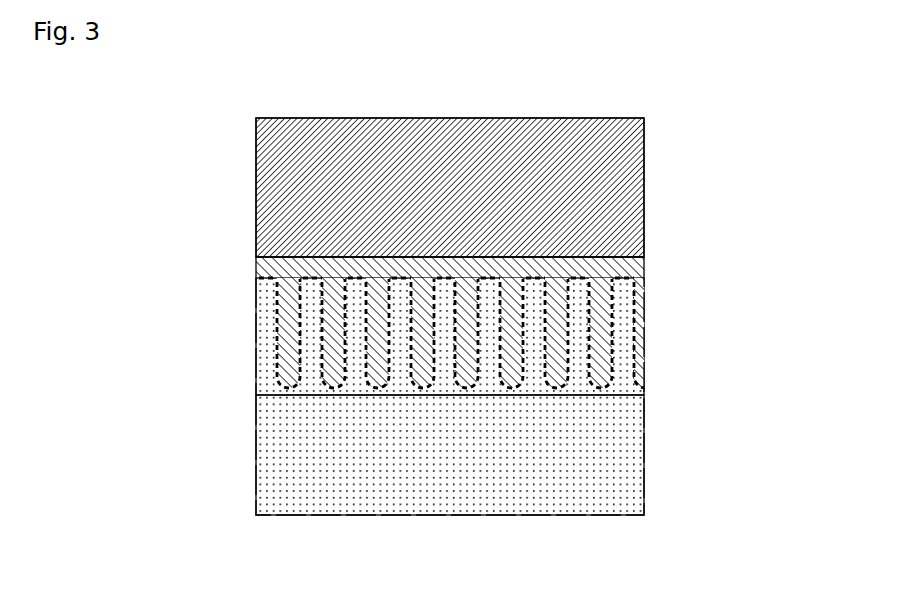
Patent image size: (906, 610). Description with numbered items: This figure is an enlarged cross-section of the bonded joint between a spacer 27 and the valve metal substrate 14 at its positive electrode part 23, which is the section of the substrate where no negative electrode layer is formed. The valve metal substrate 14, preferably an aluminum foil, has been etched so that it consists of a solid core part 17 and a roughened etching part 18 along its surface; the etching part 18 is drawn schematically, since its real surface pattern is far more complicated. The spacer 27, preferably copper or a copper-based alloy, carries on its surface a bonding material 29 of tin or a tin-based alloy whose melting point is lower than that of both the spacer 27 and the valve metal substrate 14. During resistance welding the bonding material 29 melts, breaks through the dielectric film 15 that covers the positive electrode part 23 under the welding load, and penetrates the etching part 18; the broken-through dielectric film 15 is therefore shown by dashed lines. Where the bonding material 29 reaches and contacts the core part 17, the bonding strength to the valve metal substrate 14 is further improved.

The spacer 27 is at (640, 168).
The bonding material 29 is at (636, 265).
The dielectric film 15 is at (258, 278).
The etching part 18 is at (492, 326).
The core part 17 is at (667, 395).
The valve metal substrate 14 is at (525, 386).
The positive electrode part 23 is at (525, 416).